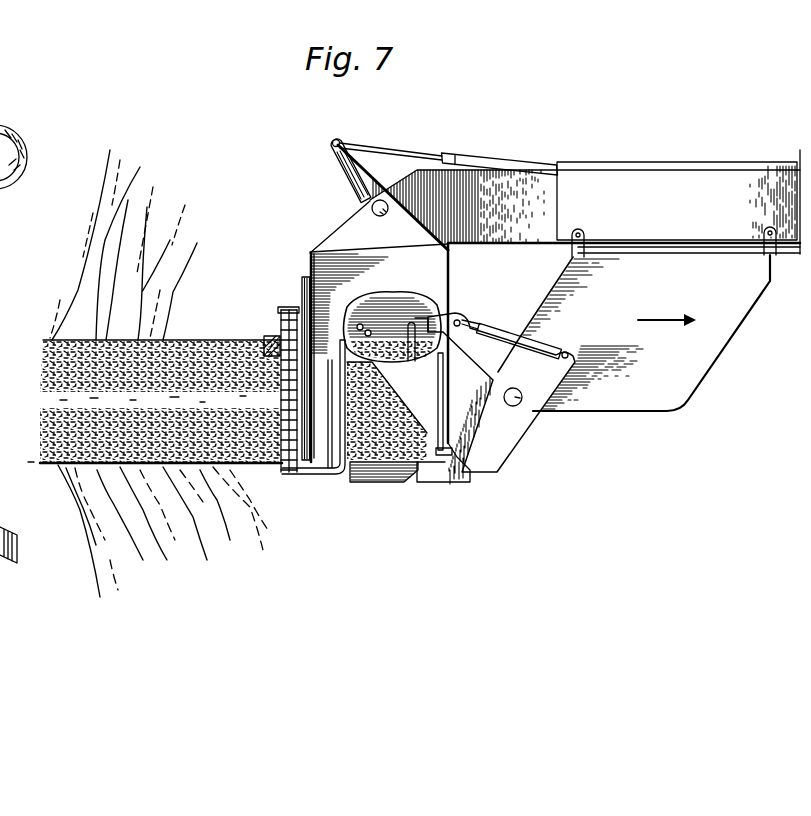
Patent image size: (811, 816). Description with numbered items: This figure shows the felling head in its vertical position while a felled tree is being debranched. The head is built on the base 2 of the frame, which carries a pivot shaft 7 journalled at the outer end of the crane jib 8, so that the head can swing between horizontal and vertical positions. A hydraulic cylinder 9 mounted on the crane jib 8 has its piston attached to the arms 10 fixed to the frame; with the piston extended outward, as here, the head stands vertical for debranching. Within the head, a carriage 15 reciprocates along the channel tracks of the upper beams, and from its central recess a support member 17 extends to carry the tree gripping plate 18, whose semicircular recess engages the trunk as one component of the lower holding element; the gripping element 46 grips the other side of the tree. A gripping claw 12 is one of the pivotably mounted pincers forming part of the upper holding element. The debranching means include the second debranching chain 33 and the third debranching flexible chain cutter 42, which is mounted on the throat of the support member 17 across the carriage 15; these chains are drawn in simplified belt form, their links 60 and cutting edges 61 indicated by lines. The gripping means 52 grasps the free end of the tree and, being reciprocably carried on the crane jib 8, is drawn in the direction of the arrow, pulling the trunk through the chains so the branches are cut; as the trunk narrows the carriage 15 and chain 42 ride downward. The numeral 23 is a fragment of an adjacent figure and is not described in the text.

The base of the frame 2 is at (337, 258).
The pivot shaft 7 is at (365, 201).
The crane jib 8 is at (618, 180).
The hydraulic cylinder 9 is at (460, 163).
The arms 10 is at (332, 153).
The gripping claw 12 is at (310, 472).
The carriage 15 is at (305, 275).
The support member 17 is at (388, 332).
The tree gripping plate 18 is at (430, 318).
The pipe end 23 is at (13, 127).
The second debranching chain 33 is at (287, 305).
The third debranching flexible chain cutter 42 is at (264, 335).
The gripping element 46 is at (390, 464).
The gripping means 52 is at (500, 422).
The links 60 is at (281, 466).
The cutting edge 61 is at (280, 397).